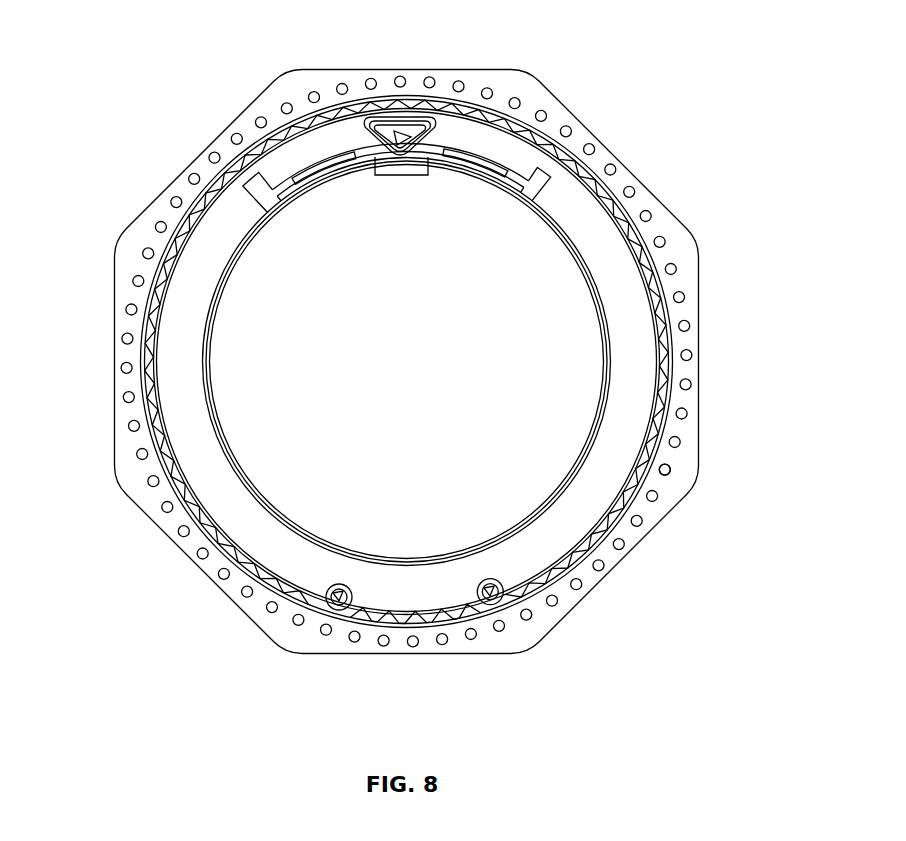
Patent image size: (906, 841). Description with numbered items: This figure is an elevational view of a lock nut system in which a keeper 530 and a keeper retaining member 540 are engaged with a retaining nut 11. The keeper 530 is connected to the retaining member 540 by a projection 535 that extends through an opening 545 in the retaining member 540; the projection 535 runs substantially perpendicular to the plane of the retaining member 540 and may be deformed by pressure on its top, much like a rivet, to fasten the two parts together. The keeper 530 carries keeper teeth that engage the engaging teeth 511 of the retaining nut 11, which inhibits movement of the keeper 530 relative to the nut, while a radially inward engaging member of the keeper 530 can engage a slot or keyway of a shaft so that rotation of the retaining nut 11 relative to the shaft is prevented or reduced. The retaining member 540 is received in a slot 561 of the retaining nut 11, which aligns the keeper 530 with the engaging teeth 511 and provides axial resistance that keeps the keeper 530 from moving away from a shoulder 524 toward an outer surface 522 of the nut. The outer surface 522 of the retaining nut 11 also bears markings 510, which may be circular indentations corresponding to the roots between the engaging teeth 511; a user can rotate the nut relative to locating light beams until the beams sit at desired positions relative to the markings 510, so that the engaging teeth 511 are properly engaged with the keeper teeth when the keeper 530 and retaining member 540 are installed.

The retaining nut 11 is at (648, 195).
The markings 510 is at (668, 472).
The engaging teeth 511 is at (277, 130).
The outer surface 522 is at (673, 427).
The shoulder 524 is at (168, 383).
The keeper 530 is at (480, 105).
The projection 535 is at (388, 137).
The keeper retaining member 540 is at (647, 313).
The opening 545 is at (413, 120).
The slot 561 is at (163, 273).